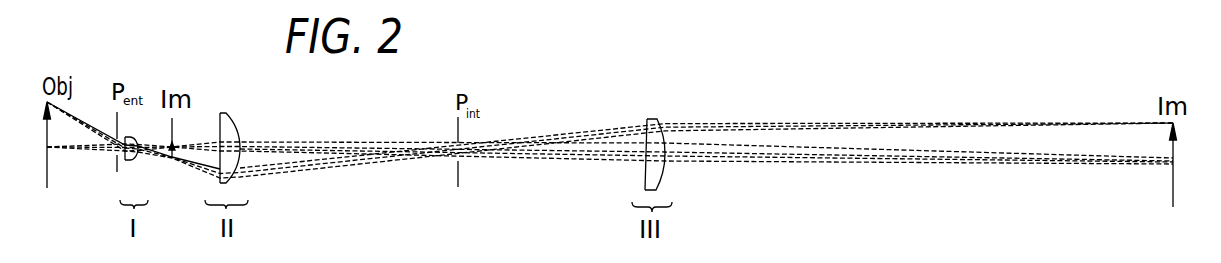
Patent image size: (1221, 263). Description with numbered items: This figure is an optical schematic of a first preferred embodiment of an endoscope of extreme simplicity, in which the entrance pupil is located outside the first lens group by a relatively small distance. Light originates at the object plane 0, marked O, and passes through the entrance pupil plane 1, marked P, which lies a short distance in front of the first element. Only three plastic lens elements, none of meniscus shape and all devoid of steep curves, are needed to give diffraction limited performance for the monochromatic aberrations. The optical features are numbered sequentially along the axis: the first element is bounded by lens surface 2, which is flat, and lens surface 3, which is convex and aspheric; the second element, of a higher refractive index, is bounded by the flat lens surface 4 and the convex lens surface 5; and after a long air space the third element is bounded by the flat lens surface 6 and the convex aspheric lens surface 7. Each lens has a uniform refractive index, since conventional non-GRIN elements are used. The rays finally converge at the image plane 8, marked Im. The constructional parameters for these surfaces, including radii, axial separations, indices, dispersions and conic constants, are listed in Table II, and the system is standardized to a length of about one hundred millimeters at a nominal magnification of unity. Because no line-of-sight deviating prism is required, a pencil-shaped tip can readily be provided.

The object plane 0 is at (54, 145).
The entrance pupil plane 1 is at (137, 153).
The lens surface 2 is at (129, 136).
The lens surface 3 is at (139, 141).
The lens surface 4 is at (212, 148).
The lens surface 5 is at (237, 148).
The lens surface 6 is at (639, 147).
The lens surface 7 is at (660, 147).
The image plane 8 is at (1180, 165).